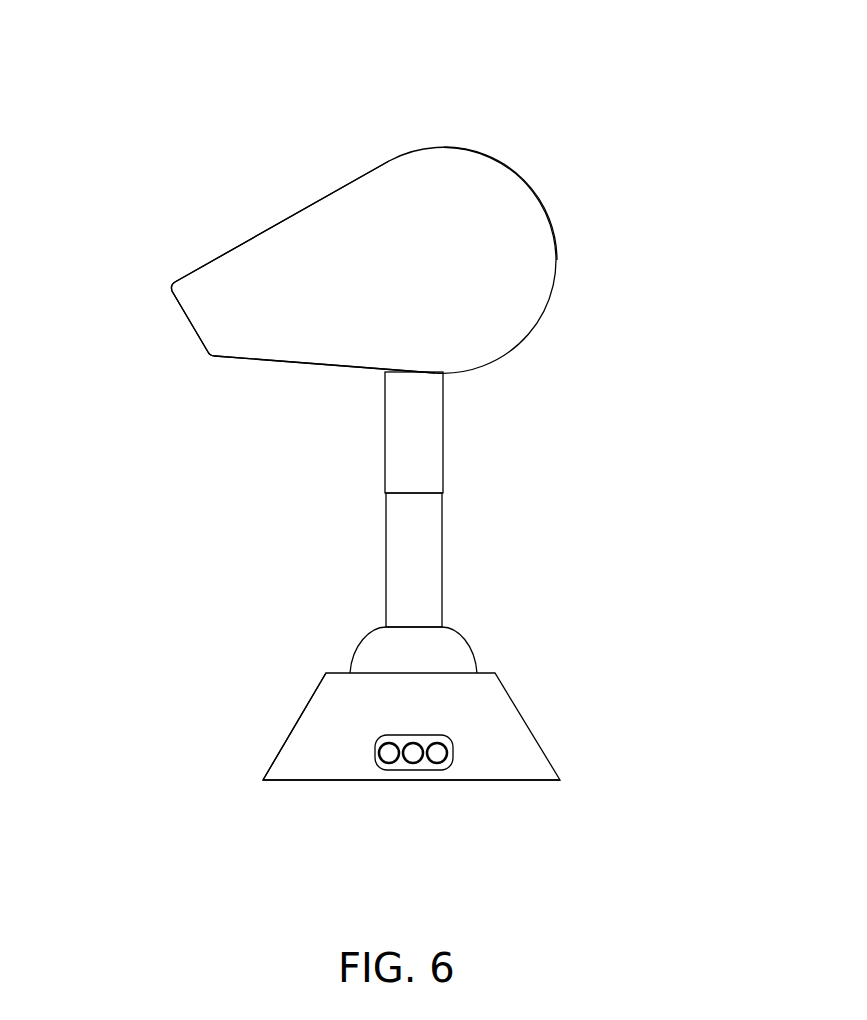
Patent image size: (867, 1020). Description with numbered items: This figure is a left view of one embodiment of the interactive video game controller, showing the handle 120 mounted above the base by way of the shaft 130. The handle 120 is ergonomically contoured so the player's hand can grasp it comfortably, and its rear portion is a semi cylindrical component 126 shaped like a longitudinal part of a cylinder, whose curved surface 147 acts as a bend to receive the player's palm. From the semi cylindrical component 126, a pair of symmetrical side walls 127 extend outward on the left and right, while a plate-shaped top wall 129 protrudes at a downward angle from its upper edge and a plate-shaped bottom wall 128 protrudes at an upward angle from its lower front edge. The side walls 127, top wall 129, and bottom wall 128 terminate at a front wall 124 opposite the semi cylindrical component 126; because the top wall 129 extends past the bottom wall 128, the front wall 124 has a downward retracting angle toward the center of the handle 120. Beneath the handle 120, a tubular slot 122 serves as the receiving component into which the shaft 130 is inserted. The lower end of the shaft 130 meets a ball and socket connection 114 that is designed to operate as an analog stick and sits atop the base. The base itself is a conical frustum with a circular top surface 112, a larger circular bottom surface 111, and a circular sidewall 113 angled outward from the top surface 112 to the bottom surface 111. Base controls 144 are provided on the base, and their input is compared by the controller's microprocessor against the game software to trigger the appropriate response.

The handle 120 is at (466, 78).
The curved surface 147 is at (523, 160).
The semi cylindrical component 126 is at (599, 186).
The top wall 129 is at (291, 195).
The side walls 127 is at (263, 262).
The front wall 124 is at (165, 326).
The bottom wall 128 is at (276, 372).
The tubular slot 122 is at (353, 432).
The shaft 130 is at (322, 554).
The ball and socket connection 114 is at (332, 648).
The top surface 112 is at (500, 662).
The circular sidewall 113 is at (275, 729).
The bottom surface 111 is at (299, 791).
The base controls 144 is at (467, 768).